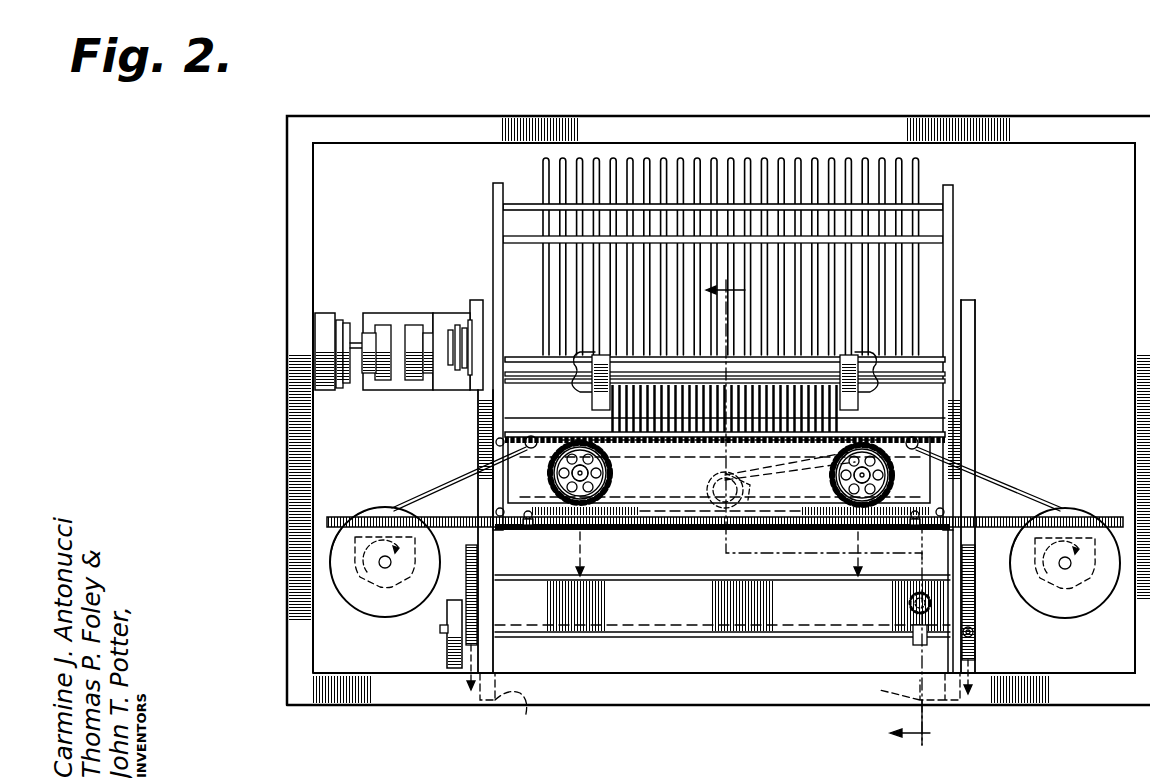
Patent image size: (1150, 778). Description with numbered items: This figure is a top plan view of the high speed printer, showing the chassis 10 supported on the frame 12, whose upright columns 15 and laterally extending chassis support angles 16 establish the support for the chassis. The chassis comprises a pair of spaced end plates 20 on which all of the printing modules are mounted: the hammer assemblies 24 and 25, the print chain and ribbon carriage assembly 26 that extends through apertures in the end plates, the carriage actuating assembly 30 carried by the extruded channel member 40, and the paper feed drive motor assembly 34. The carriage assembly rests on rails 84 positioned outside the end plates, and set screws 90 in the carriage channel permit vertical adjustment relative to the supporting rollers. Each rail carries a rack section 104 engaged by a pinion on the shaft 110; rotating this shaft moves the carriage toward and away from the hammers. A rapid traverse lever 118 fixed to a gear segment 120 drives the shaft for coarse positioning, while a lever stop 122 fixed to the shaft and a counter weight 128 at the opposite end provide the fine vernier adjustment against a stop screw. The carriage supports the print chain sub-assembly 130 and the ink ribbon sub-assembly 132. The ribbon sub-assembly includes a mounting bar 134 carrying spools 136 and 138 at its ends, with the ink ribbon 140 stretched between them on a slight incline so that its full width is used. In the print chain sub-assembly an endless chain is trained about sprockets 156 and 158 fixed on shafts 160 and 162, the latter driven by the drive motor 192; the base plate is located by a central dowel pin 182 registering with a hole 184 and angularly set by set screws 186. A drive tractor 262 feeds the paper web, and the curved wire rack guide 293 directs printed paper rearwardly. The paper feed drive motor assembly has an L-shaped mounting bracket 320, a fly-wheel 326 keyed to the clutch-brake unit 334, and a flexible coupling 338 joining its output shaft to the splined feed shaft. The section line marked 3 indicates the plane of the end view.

The section line 3- 3 is at (816, 519).
The chassis 10 is at (980, 434).
The frame 12 is at (1025, 708).
The upright members or columns 15 is at (720, 702).
The chassis support angles 16 is at (1055, 355).
The end plates 20 is at (477, 300).
The hammer assembly 24 is at (848, 432).
The hammer assembly 25 is at (725, 408).
The print chain and ribbon carriage assembly 26 is at (598, 398).
The carriage actuating assembly 30 is at (733, 574).
The paper feed drive motor assembly 34 is at (404, 311).
The channel member 40 is at (820, 578).
The rail 84 is at (455, 472).
The set screws 90 is at (500, 436).
The rack section 104 is at (480, 590).
The shaft 110 is at (570, 638).
The rapid traverse lever 118 is at (975, 634).
The gear segment 120 is at (975, 625).
The lever stop 122 is at (910, 612).
The counter weight 128 is at (446, 656).
The print chain sub-assembly 130 is at (632, 512).
The ink ribbon sub-assembly 132 is at (1018, 484).
The mounting bar 134 is at (1013, 524).
The spool 136 is at (405, 600).
The spool 138 is at (1090, 598).
The ink ribbon 140 is at (1035, 505).
The gear or sprocket 156 is at (612, 474).
The gear or sprocket 158 is at (832, 478).
The shaft 160 is at (560, 478).
The shaft 162 is at (880, 478).
The central dowel pin 182 is at (745, 488).
The hole 184 is at (720, 475).
The set screws 186 is at (530, 526).
The drive motor 192 is at (705, 488).
The drive tractor 262 is at (548, 438).
The curved wire rack guide 293 is at (920, 180).
The L-shaped mounting bracket 320 is at (470, 380).
The fly-wheel 326 is at (330, 312).
The clutch-brake unit 334 is at (413, 324).
The flexible coupling 338 is at (462, 380).